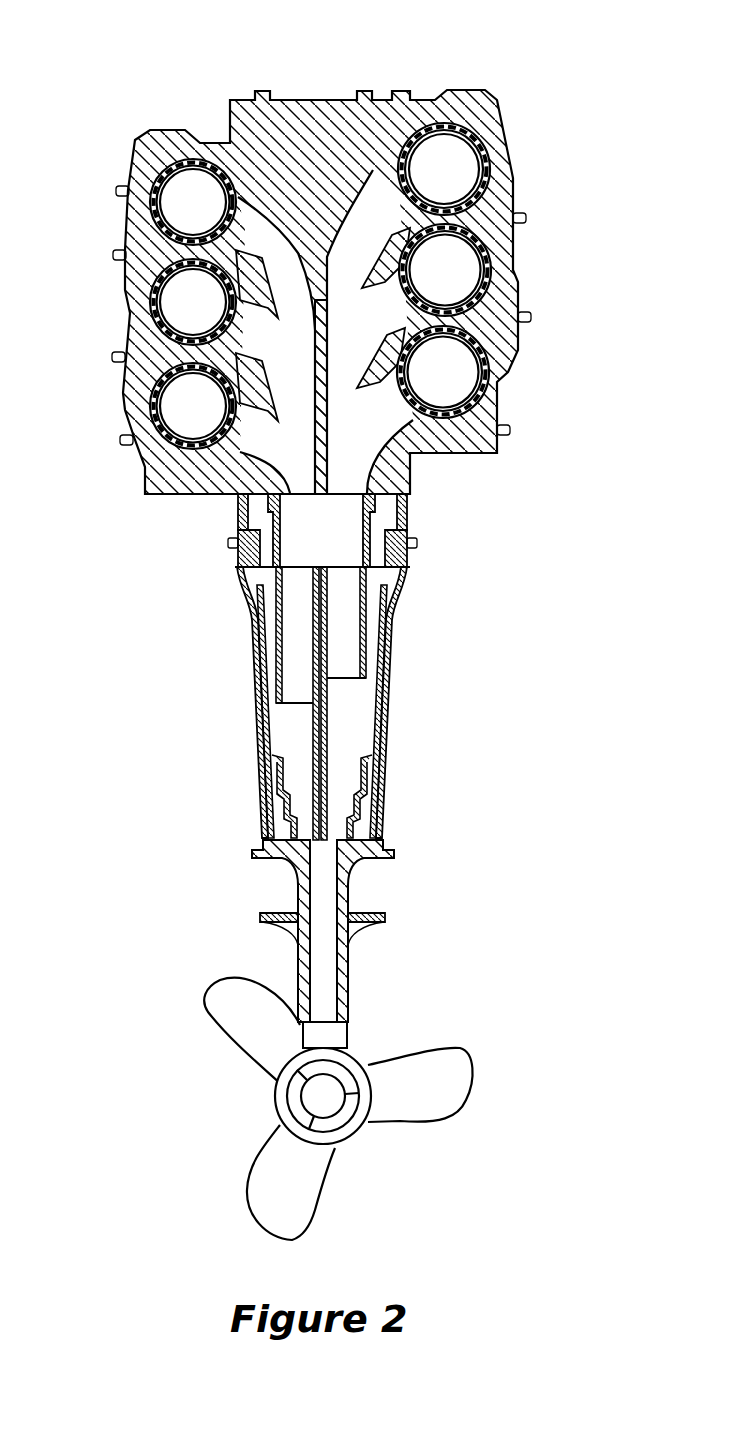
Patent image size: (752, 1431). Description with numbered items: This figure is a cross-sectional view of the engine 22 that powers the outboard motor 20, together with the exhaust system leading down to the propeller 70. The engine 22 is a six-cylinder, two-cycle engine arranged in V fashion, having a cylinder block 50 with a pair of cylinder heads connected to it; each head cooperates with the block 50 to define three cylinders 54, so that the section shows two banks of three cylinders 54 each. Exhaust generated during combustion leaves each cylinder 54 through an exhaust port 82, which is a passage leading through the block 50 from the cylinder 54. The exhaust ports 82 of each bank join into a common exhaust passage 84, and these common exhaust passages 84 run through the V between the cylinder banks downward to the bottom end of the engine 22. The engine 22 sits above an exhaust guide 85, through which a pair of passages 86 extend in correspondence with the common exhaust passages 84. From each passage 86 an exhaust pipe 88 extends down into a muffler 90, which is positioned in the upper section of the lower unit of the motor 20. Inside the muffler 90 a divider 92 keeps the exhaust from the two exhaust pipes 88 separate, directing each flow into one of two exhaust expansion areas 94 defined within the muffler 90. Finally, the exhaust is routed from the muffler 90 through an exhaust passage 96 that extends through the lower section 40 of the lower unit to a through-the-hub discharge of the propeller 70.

The outboard motor 20 is at (520, 86).
The engine 22 is at (529, 197).
The cylinder block 50 is at (118, 288).
The cylinders 54 is at (437, 140).
The exhaust port 82 is at (258, 202).
The common exhaust passage 84 is at (343, 475).
The exhaust guide 85 is at (407, 528).
The passages 86 is at (248, 556).
The exhaust pipe 88 is at (367, 628).
The muffler 90 is at (388, 717).
The divider 92 is at (388, 674).
The exhaust expansion areas 94 is at (303, 778).
The exhaust passage 96 is at (325, 952).
The lower section 40 is at (348, 960).
The propeller 70 is at (420, 1047).